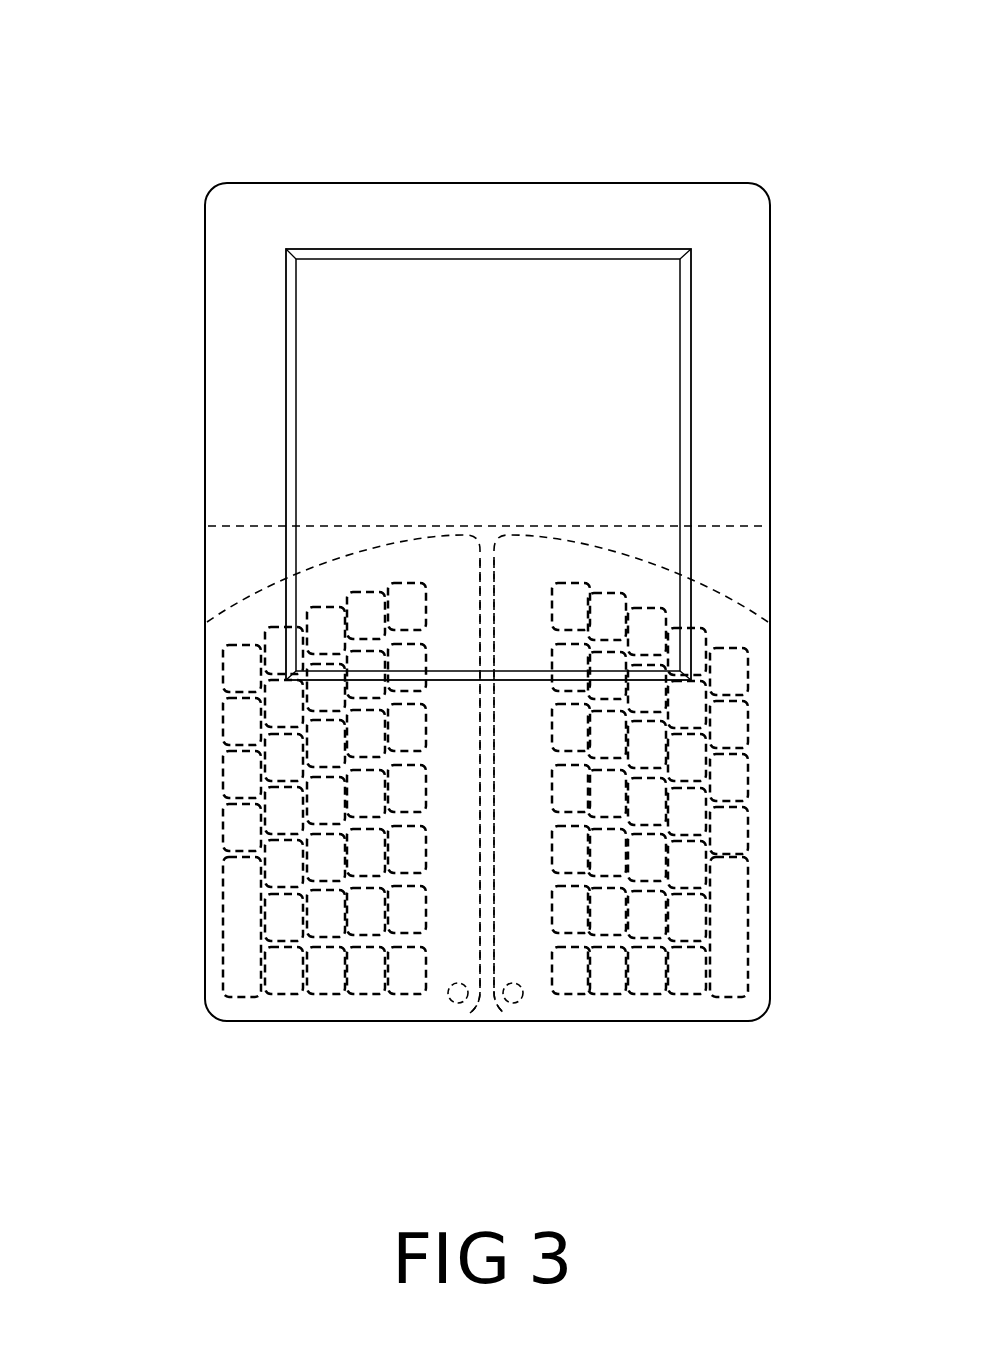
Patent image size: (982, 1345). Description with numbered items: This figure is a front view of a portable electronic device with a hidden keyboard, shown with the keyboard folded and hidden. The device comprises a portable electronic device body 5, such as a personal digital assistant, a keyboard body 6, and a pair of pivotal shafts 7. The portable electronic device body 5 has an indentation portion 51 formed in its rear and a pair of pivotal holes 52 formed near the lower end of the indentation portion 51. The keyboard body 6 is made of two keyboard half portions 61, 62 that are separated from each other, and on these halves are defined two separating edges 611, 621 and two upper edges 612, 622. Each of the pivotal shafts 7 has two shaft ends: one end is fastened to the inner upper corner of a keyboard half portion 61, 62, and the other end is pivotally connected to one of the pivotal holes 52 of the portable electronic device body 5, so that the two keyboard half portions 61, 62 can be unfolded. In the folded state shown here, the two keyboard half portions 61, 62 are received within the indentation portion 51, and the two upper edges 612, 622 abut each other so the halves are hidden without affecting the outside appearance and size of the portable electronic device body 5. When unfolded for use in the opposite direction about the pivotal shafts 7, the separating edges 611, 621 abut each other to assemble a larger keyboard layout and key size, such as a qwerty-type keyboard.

The portable electronic device body 5 is at (673, 148).
The indentation portion 51 is at (737, 551).
The pivotal holes 52 is at (460, 998).
The keyboard body 6 is at (459, 782).
The keyboard half portion 61 is at (338, 773).
The separating edge 611 is at (307, 1022).
The upper edge 612 is at (481, 598).
The keyboard half portion 62 is at (639, 790).
The separating edge 621 is at (635, 1022).
The upper edge 622 is at (492, 628).
The pivotal shafts 7 is at (466, 1000).